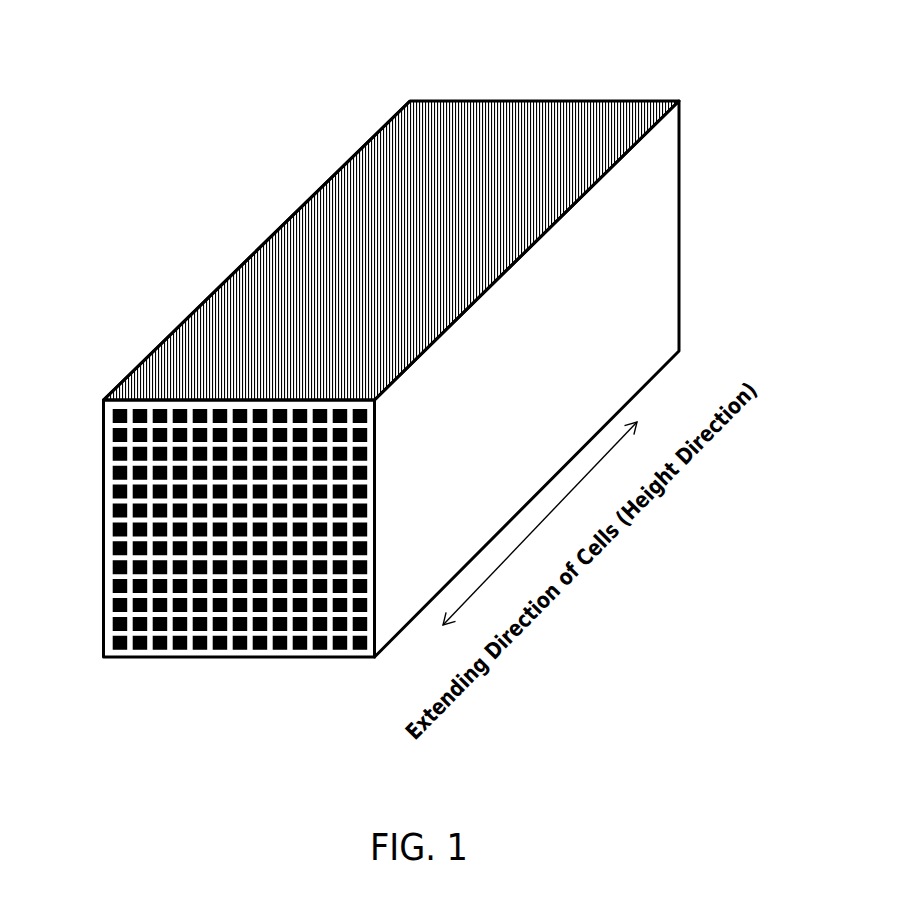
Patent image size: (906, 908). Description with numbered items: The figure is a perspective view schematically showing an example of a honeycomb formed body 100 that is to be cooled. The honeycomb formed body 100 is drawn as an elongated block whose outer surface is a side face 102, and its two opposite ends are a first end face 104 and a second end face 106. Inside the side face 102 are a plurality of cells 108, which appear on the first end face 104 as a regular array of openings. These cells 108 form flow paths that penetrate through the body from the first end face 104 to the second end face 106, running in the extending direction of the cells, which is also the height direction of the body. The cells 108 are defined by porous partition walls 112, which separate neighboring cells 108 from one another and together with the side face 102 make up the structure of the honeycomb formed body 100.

The honeycomb formed body 100 is at (411, 350).
The side face 102 is at (229, 297).
The first end face 104 is at (204, 528).
The second end face 106 is at (512, 100).
The cells 108 is at (113, 525).
The porous partition walls 112 is at (113, 423).